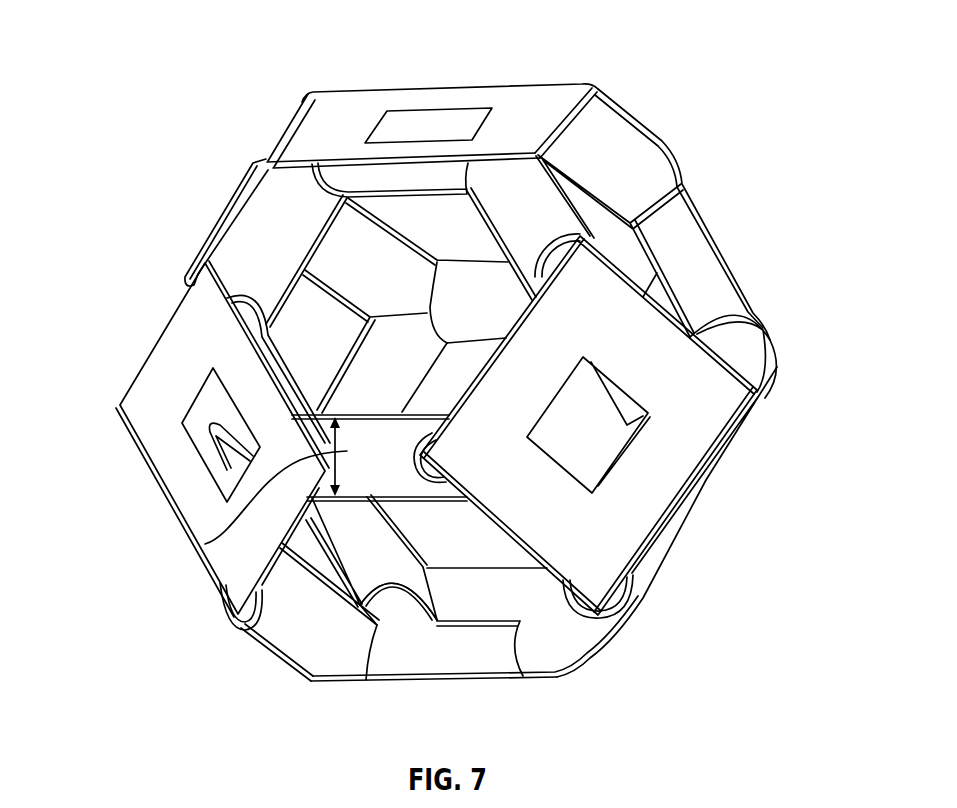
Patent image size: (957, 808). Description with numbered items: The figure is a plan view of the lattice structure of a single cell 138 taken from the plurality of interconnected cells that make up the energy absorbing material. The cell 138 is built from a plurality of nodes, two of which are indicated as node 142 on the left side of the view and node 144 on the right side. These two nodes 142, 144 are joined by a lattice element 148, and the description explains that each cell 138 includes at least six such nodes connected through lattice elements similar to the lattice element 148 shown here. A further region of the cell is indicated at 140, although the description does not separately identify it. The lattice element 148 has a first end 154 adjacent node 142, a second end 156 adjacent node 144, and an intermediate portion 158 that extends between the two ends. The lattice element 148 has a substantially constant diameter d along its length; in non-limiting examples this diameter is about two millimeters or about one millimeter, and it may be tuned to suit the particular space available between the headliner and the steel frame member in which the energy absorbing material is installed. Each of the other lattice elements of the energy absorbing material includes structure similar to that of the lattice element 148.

The cell 138 is at (256, 75).
The unit cell 140 is at (120, 511).
The node 142 is at (146, 418).
The node 144 is at (600, 426).
The lattice element 148 is at (362, 484).
The first end 154 is at (205, 544).
The second end 156 is at (436, 438).
The intermediate portion 158 is at (400, 420).
The diameter d is at (400, 498).